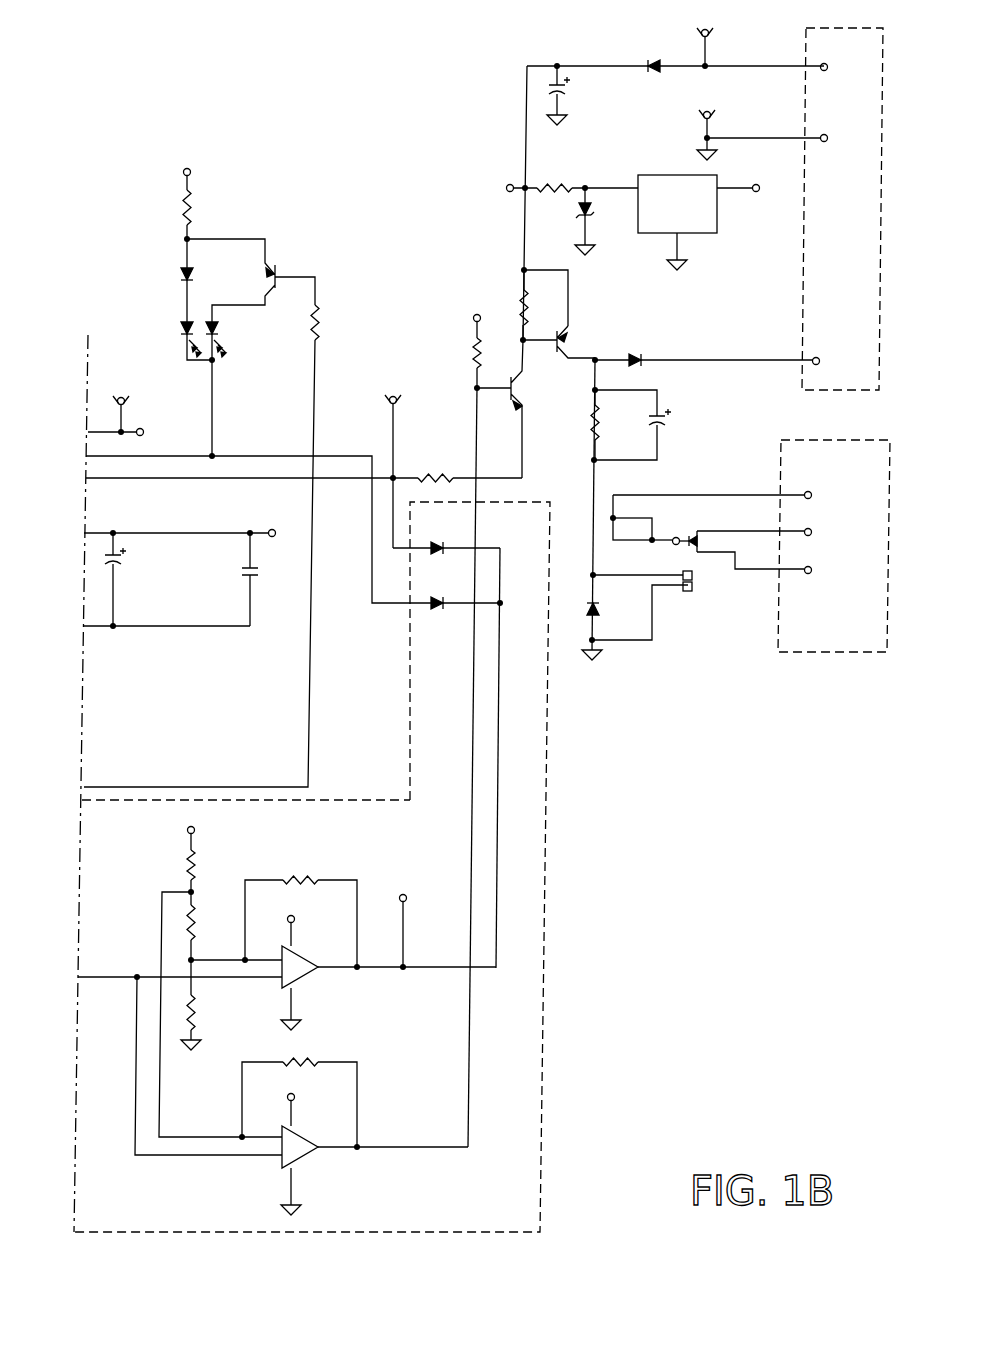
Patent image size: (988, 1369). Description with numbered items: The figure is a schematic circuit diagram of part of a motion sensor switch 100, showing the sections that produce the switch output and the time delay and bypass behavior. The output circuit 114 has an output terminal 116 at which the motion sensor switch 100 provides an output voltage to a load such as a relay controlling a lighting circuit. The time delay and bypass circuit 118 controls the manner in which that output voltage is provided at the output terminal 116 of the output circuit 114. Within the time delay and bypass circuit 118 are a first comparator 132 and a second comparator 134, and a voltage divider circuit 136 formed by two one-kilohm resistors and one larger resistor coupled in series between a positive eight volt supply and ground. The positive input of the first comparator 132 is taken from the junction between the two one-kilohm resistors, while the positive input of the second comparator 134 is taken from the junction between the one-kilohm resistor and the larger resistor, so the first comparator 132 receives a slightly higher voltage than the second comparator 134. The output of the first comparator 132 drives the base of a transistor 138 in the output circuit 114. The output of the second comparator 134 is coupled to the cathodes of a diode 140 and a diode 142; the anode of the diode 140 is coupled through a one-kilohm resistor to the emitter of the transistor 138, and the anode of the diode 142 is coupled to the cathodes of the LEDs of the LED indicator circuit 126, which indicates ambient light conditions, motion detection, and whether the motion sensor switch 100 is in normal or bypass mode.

The motion sensor switch 100 is at (482, 621).
The output circuit 114 is at (800, 377).
The output terminal 116 is at (814, 360).
The time delay and bypass circuit 118 is at (363, 1012).
The LED indicator circuit 126 is at (229, 359).
The first comparator 132 is at (303, 1165).
The second comparator 134 is at (306, 987).
The voltage divider circuit 136 is at (181, 876).
The transistor 138 is at (532, 376).
The diode 140 is at (449, 557).
The diode 142 is at (437, 618).